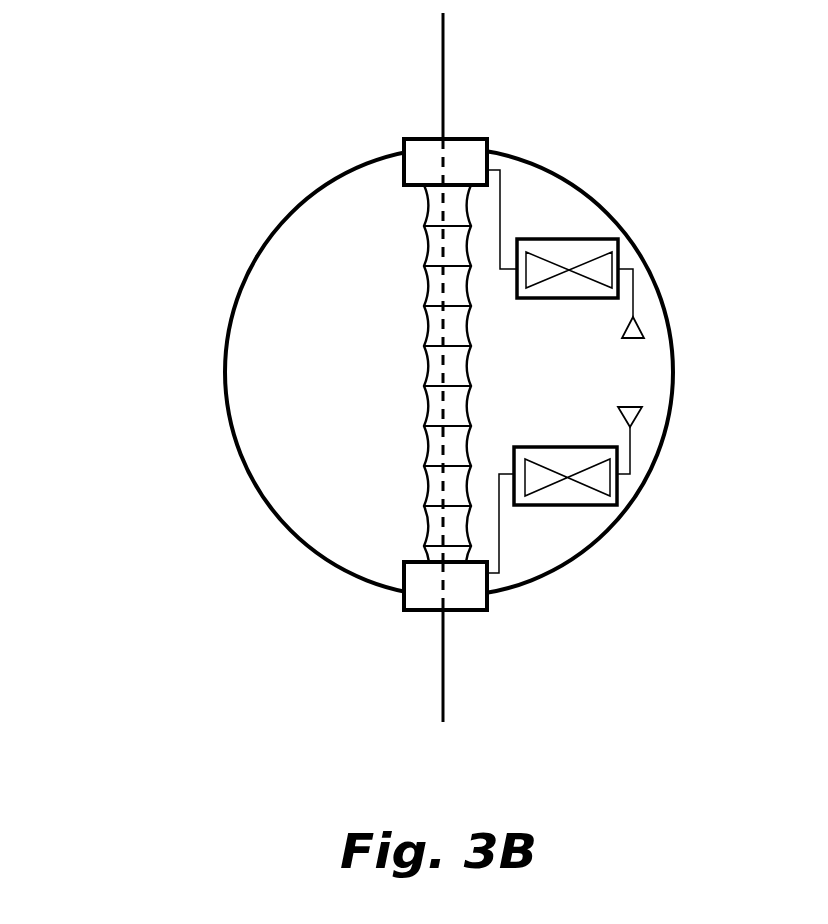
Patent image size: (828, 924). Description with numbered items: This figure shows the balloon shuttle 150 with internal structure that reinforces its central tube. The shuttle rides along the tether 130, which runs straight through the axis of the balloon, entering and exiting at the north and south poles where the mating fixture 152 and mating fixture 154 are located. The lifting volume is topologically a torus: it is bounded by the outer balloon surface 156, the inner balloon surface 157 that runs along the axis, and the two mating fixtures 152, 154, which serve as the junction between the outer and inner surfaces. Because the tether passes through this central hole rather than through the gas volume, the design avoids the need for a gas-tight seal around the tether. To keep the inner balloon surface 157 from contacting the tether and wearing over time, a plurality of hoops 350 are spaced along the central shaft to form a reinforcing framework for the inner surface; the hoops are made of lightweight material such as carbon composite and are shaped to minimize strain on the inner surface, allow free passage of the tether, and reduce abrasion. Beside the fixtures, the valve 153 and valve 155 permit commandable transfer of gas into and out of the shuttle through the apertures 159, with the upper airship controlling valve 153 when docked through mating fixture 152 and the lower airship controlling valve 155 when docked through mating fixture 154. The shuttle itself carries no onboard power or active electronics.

The tether 130 is at (443, 73).
The balloon shuttle 150 is at (182, 455).
The mating fixture 152 is at (468, 137).
The valve 153 is at (582, 238).
The mating fixture 154 is at (472, 612).
The valve 155 is at (595, 507).
The outer balloon surface 156 is at (280, 527).
The inner balloon surface 157 is at (418, 382).
The apertures 159 is at (620, 339).
The hoops 350 is at (426, 337).